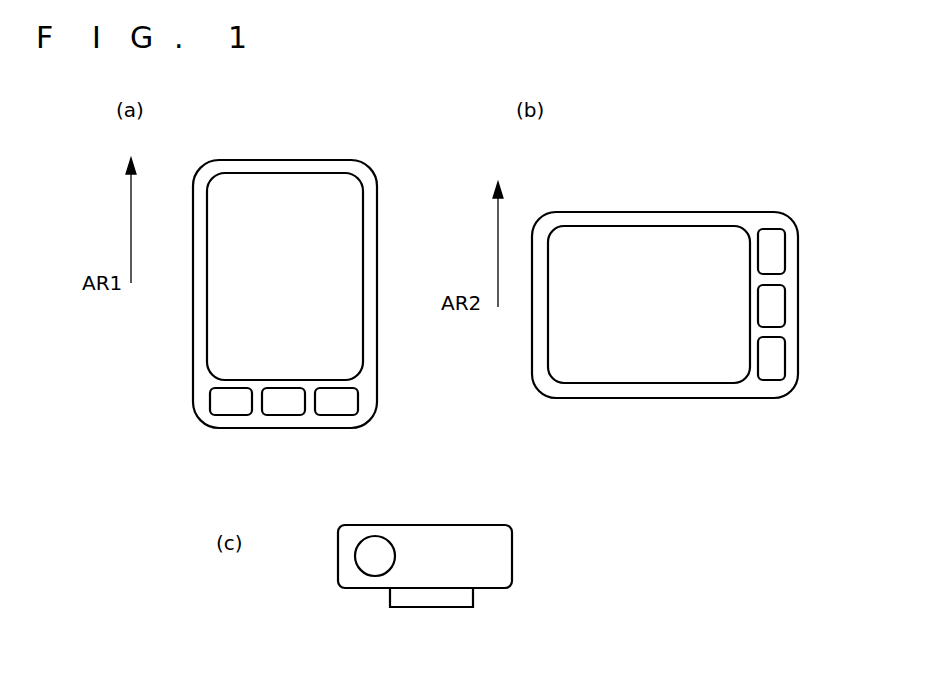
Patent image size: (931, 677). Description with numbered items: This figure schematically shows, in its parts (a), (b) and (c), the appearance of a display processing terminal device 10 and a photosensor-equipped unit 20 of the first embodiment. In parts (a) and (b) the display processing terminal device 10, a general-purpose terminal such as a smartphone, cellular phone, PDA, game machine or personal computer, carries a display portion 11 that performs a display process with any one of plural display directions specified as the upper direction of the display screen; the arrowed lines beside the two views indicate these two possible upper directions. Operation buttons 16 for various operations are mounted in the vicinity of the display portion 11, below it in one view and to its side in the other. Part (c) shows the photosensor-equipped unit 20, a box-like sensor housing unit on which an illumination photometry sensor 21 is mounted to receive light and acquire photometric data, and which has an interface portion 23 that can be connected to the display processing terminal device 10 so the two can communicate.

The display processing terminal device 10 is at (378, 400).
The display portion 11 is at (353, 213).
The operation buttons 16 is at (332, 408).
The photosensor-equipped unit 20 is at (330, 554).
The illumination photometry sensor 21 is at (375, 556).
The interface portion 23 is at (430, 607).